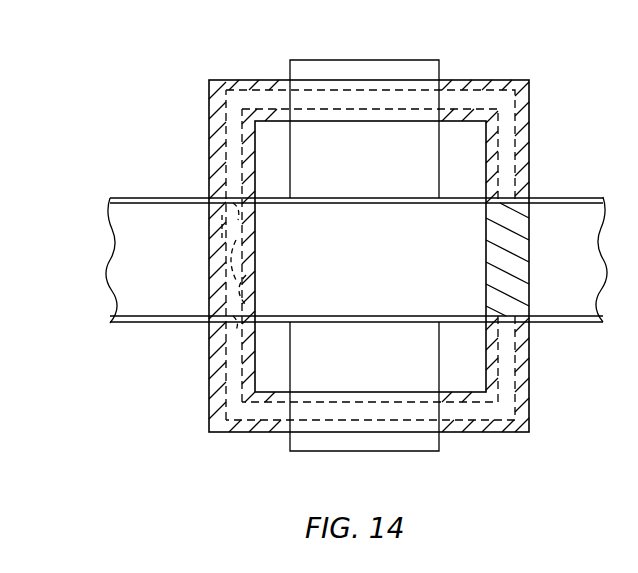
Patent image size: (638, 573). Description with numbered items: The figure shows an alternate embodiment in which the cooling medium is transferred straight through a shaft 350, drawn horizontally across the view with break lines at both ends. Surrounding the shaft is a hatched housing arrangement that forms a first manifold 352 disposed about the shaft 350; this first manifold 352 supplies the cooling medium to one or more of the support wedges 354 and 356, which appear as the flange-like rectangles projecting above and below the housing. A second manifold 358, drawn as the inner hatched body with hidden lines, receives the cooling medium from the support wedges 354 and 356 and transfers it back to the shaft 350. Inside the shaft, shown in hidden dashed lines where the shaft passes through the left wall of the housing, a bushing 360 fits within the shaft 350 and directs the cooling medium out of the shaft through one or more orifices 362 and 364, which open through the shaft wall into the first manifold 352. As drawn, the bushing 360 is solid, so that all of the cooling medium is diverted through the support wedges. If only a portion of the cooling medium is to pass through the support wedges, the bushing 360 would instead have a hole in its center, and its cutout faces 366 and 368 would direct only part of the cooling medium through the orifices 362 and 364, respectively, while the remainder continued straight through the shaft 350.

The shaft 350 is at (110, 197).
The first manifold 352 is at (209, 102).
The support wedge 354 is at (385, 79).
The support wedge 356 is at (425, 433).
The second manifold 358 is at (529, 105).
The bushing 360 is at (228, 258).
The orifice 362 is at (237, 203).
The orifice 364 is at (233, 323).
The cutout face 366 is at (222, 224).
The cutout face 368 is at (233, 290).